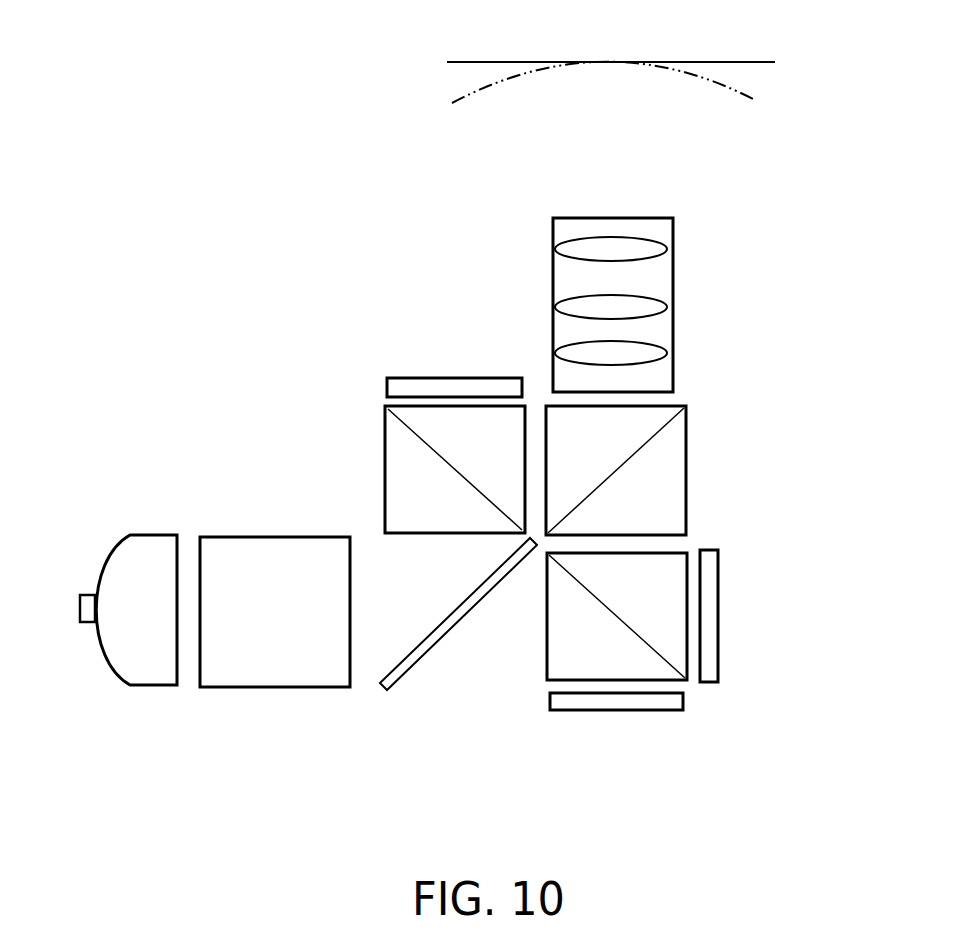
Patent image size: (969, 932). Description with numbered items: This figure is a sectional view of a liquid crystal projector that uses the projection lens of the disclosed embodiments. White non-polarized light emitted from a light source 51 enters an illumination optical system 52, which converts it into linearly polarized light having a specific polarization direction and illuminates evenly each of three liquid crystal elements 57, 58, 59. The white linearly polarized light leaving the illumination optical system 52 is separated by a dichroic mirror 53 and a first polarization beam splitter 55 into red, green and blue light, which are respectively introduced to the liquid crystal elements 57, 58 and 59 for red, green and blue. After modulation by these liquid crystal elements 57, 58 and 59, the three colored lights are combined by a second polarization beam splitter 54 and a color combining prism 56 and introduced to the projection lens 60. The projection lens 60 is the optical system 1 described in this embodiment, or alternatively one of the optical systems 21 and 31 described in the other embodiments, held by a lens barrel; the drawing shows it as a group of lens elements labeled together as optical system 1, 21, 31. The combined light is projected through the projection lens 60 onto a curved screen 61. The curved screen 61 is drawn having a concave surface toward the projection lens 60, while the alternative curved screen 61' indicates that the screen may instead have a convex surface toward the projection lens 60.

The optical system 1 is at (687, 301).
The optical system 21 is at (611, 301).
The optical system 31 is at (672, 248).
The light source 51 is at (108, 565).
The illumination optical system 52 is at (270, 688).
The dichroic mirror 53 is at (388, 695).
The second polarization beam splitter 54 is at (385, 450).
The first polarization beam splitter 55 is at (560, 652).
The color combining prism 56 is at (686, 478).
The liquid crystal element 57 is at (430, 377).
The liquid crystal element 58 is at (590, 712).
The liquid crystal element 59 is at (718, 622).
The projection lens 60 is at (719, 305).
The curved screen 61 is at (622, 33).
The curved screen 61' is at (646, 82).